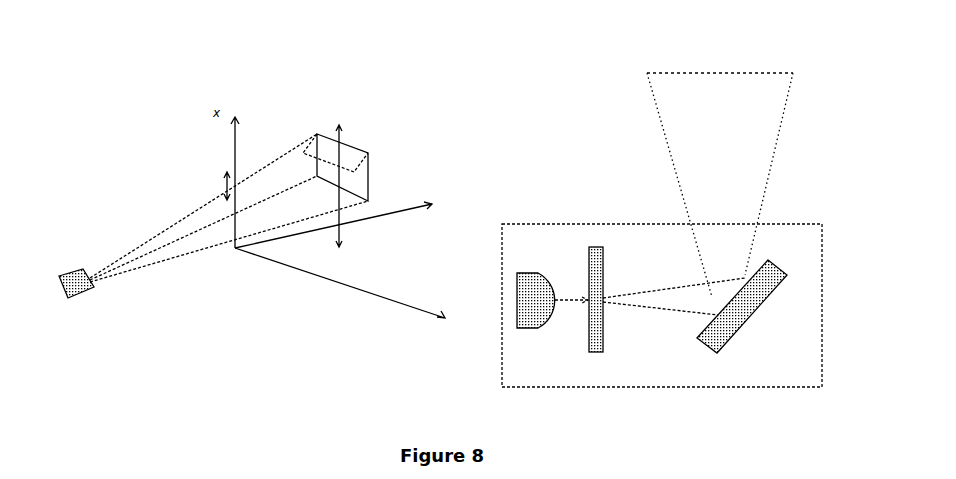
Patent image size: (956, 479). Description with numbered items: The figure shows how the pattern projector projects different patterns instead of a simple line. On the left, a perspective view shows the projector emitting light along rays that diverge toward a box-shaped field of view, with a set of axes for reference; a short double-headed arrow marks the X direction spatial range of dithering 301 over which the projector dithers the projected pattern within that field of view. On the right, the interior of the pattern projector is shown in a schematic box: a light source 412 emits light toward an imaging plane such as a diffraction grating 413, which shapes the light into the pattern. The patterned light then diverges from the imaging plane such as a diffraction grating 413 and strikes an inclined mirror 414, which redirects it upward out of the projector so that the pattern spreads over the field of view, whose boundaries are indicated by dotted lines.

The X direction spatial range of dithering 301 is at (225, 195).
The light source 412 is at (540, 326).
The imaging plane such as a diffraction grating 413 is at (600, 352).
The mirror 414 is at (727, 345).